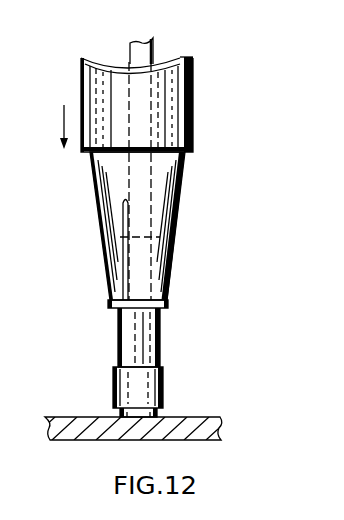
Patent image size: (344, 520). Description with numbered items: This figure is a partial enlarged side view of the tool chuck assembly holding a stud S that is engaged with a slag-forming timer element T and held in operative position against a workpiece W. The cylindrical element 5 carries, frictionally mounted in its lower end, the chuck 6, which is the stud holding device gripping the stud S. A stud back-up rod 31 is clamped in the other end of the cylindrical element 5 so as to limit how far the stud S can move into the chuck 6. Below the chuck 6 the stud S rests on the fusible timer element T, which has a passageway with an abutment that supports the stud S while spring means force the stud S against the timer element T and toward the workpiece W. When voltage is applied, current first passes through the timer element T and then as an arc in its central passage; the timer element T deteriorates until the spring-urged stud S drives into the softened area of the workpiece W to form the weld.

The stud back-up rod 31 is at (153, 52).
The cylindrical element 5 is at (193, 112).
The chuck 6 is at (182, 203).
The stud S is at (158, 340).
The slag-forming timer element T is at (171, 391).
The workpiece W is at (222, 426).